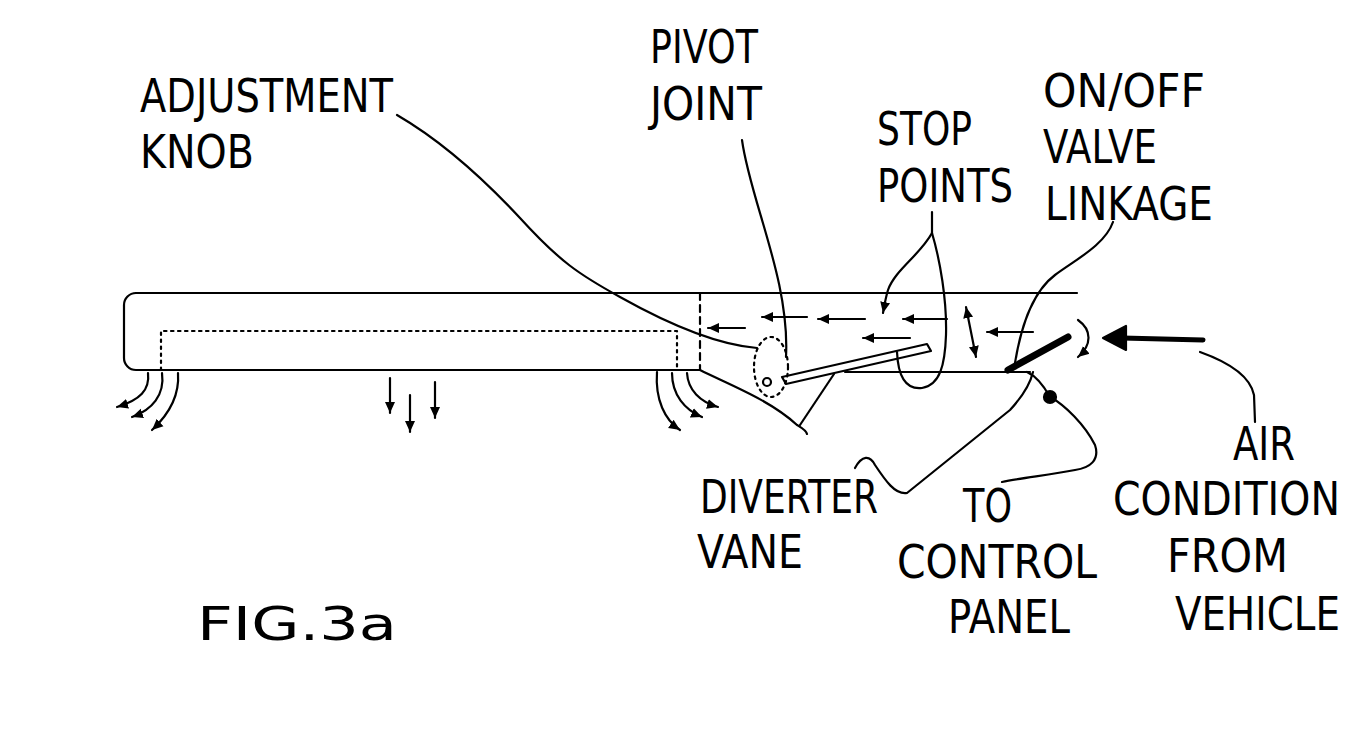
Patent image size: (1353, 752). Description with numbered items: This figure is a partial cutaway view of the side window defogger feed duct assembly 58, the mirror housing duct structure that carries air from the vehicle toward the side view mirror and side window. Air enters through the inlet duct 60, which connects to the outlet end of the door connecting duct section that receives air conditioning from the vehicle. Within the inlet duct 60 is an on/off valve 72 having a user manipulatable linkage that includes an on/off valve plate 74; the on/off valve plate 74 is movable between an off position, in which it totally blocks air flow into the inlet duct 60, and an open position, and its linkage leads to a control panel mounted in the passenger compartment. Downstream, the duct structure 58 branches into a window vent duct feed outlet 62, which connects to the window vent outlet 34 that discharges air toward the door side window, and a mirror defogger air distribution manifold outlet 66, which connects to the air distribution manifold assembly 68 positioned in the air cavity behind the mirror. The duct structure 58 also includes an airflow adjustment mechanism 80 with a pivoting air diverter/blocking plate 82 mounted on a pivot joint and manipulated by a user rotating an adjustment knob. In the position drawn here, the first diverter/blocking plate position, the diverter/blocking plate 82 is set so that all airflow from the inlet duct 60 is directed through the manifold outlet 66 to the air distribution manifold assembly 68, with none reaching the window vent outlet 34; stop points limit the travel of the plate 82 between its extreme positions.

The window vent outlet 34 is at (807, 434).
The side window defogger feed duct assembly 58 is at (749, 293).
The inlet duct 60 is at (990, 318).
The window vent duct feed outlet 62 is at (826, 385).
The mirror defogger air distribution manifold outlet 66 is at (728, 308).
The air distribution manifold assembly 68 is at (343, 316).
The on/off valve 72 is at (1047, 350).
The on/off valve plate 74 is at (1057, 325).
The airflow adjustment mechanism 80 is at (745, 413).
The pivoting air diverter/blocking plate 82 is at (847, 363).